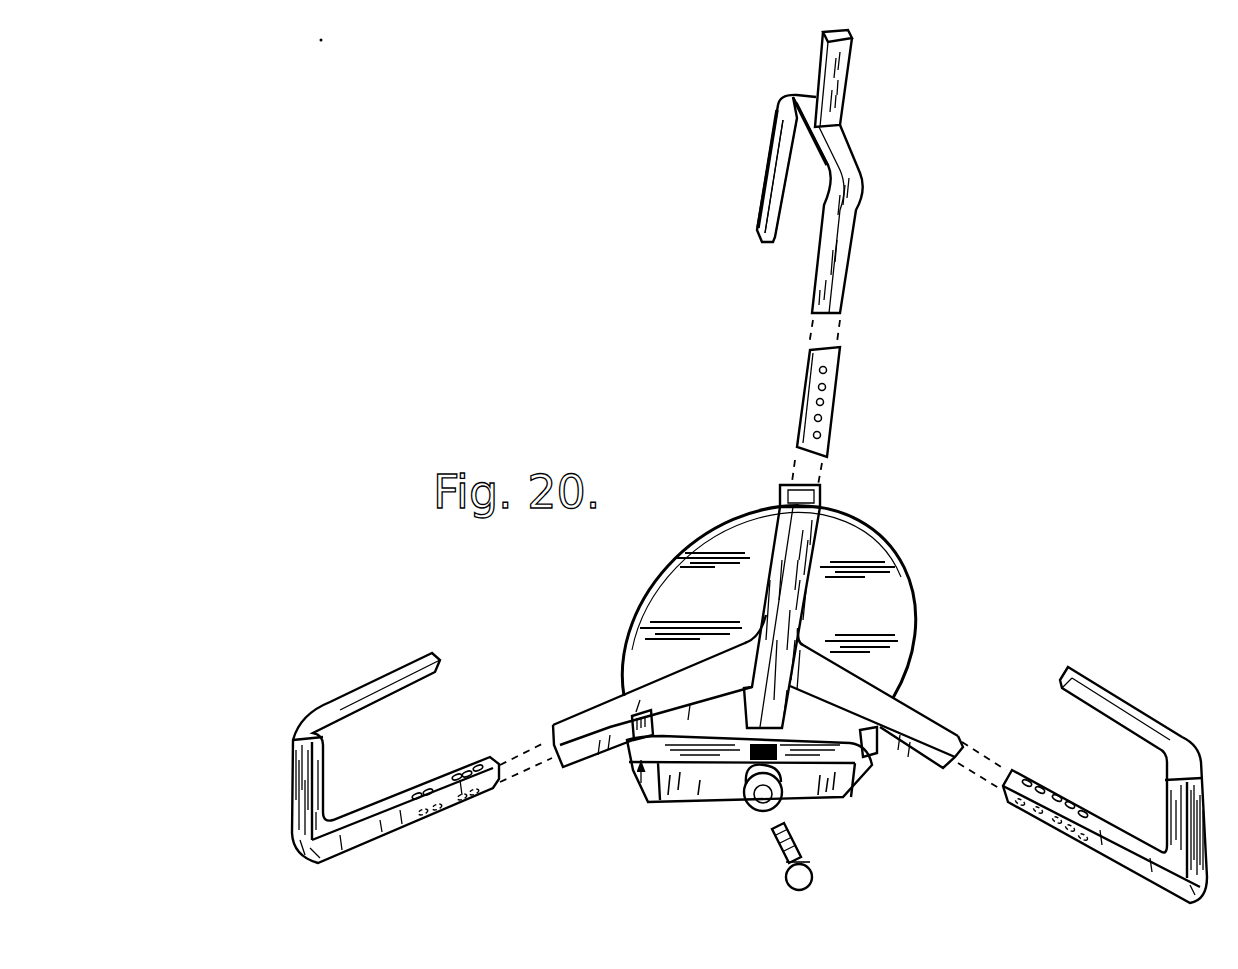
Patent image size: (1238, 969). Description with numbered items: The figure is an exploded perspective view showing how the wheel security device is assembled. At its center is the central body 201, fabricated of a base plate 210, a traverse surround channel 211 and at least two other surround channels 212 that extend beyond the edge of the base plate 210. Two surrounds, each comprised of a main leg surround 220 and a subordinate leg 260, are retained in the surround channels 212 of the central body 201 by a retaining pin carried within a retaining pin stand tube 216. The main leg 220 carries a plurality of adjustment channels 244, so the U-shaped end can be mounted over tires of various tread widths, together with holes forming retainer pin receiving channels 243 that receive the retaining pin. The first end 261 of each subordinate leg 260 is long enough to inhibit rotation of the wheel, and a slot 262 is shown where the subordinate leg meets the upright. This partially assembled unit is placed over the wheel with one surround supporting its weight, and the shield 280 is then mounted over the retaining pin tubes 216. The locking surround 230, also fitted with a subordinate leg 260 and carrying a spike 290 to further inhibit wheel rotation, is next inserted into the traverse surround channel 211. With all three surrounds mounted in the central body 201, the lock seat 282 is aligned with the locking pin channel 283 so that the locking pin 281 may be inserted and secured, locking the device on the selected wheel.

The central body 201 is at (932, 530).
The base plate 210 is at (887, 603).
The traverse surround channel 211 is at (790, 530).
The surround channels 212 is at (607, 700).
The retaining pin stand tube 216 is at (623, 752).
The surround 220 is at (382, 845).
The locking surround 230 is at (853, 253).
The retainer pin receiving channels 243 is at (465, 800).
The adjustment channels 244 is at (457, 776).
The subordinate leg 260 is at (767, 173).
The first end 261 is at (757, 208).
The slot 262 is at (797, 110).
The shield 280 is at (862, 800).
The locking pin 281 is at (803, 853).
The lock seat 282 is at (751, 800).
The locking pin channel 283 is at (815, 435).
The spike 290 is at (847, 53).